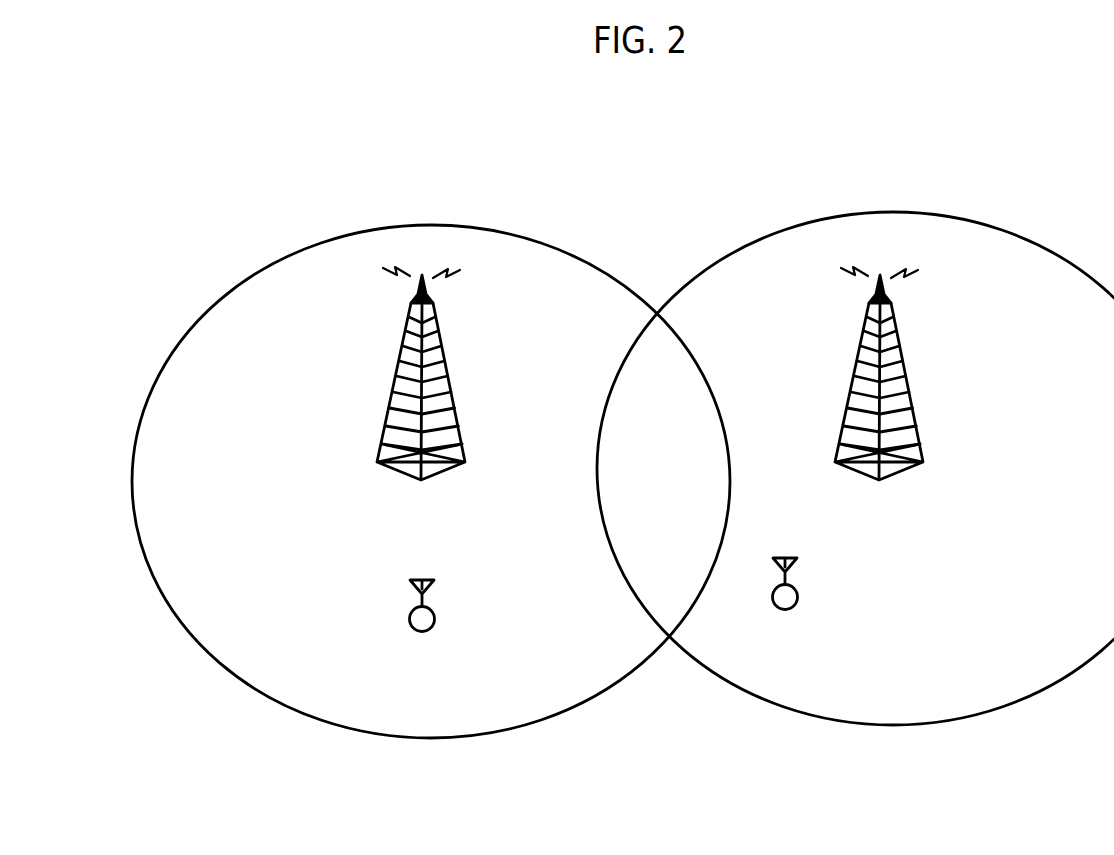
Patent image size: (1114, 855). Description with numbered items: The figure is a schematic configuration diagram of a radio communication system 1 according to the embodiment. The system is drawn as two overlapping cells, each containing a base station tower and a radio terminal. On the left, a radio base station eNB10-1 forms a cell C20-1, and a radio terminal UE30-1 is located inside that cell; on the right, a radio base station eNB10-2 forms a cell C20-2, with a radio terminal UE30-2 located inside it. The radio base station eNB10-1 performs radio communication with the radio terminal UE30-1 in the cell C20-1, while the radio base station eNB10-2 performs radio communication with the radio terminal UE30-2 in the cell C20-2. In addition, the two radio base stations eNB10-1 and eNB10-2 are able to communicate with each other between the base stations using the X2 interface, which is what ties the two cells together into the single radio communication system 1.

The radio communication system 1 is at (910, 119).
The cell C20-1 is at (302, 251).
The cell C20-2 is at (770, 236).
The radio base station eNB10-1 is at (404, 357).
The radio base station eNB10-2 is at (901, 362).
The radio terminal UE30-1 is at (409, 620).
The radio terminal UE30-2 is at (798, 597).